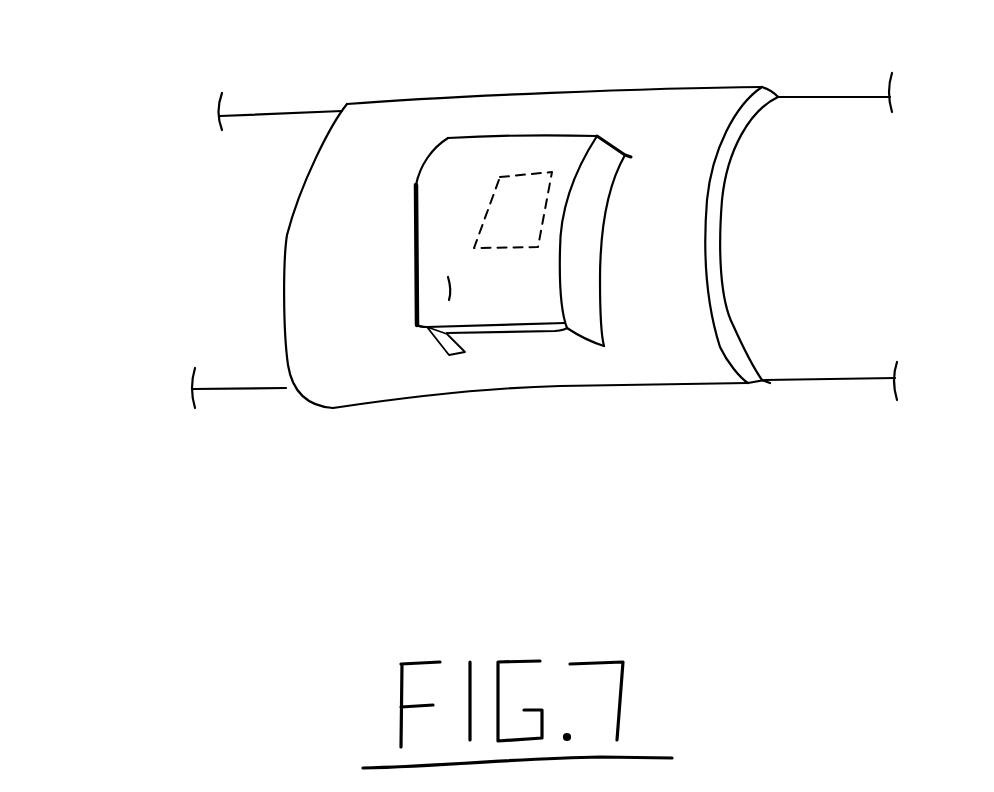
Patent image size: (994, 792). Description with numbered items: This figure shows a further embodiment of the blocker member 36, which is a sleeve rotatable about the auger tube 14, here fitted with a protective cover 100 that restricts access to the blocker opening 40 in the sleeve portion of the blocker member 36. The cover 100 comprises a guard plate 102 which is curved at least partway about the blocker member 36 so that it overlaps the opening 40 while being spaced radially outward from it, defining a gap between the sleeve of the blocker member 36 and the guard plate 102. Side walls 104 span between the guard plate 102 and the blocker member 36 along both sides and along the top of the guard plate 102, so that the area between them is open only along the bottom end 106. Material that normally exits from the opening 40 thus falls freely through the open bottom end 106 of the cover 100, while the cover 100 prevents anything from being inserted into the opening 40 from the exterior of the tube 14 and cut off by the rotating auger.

The auger tube 14 is at (853, 467).
The blocker member 36 is at (655, 395).
The blocker opening 40 is at (485, 457).
The cover 100 is at (445, 238).
The guard plate 102 is at (295, 511).
The side walls 104 is at (405, 203).
The bottom end 106 is at (543, 352).